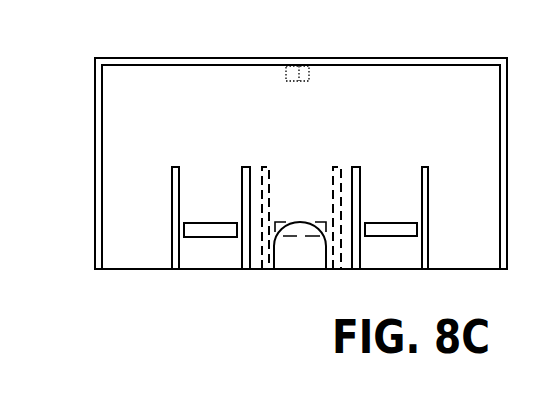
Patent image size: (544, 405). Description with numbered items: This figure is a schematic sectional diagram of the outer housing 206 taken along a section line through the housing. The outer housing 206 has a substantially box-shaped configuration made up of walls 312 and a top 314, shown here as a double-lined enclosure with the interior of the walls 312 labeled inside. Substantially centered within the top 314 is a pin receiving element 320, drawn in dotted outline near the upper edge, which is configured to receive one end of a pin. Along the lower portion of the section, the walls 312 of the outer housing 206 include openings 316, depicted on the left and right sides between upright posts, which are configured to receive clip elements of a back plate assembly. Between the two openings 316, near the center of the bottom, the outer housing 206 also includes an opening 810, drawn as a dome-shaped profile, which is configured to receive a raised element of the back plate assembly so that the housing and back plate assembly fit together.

The outer housing 206 is at (72, 106).
The walls 312 is at (213, 121).
The top 314 is at (152, 63).
The openings 316 is at (298, 218).
The pin receiving element 320 is at (310, 79).
The opening 810 is at (300, 255).